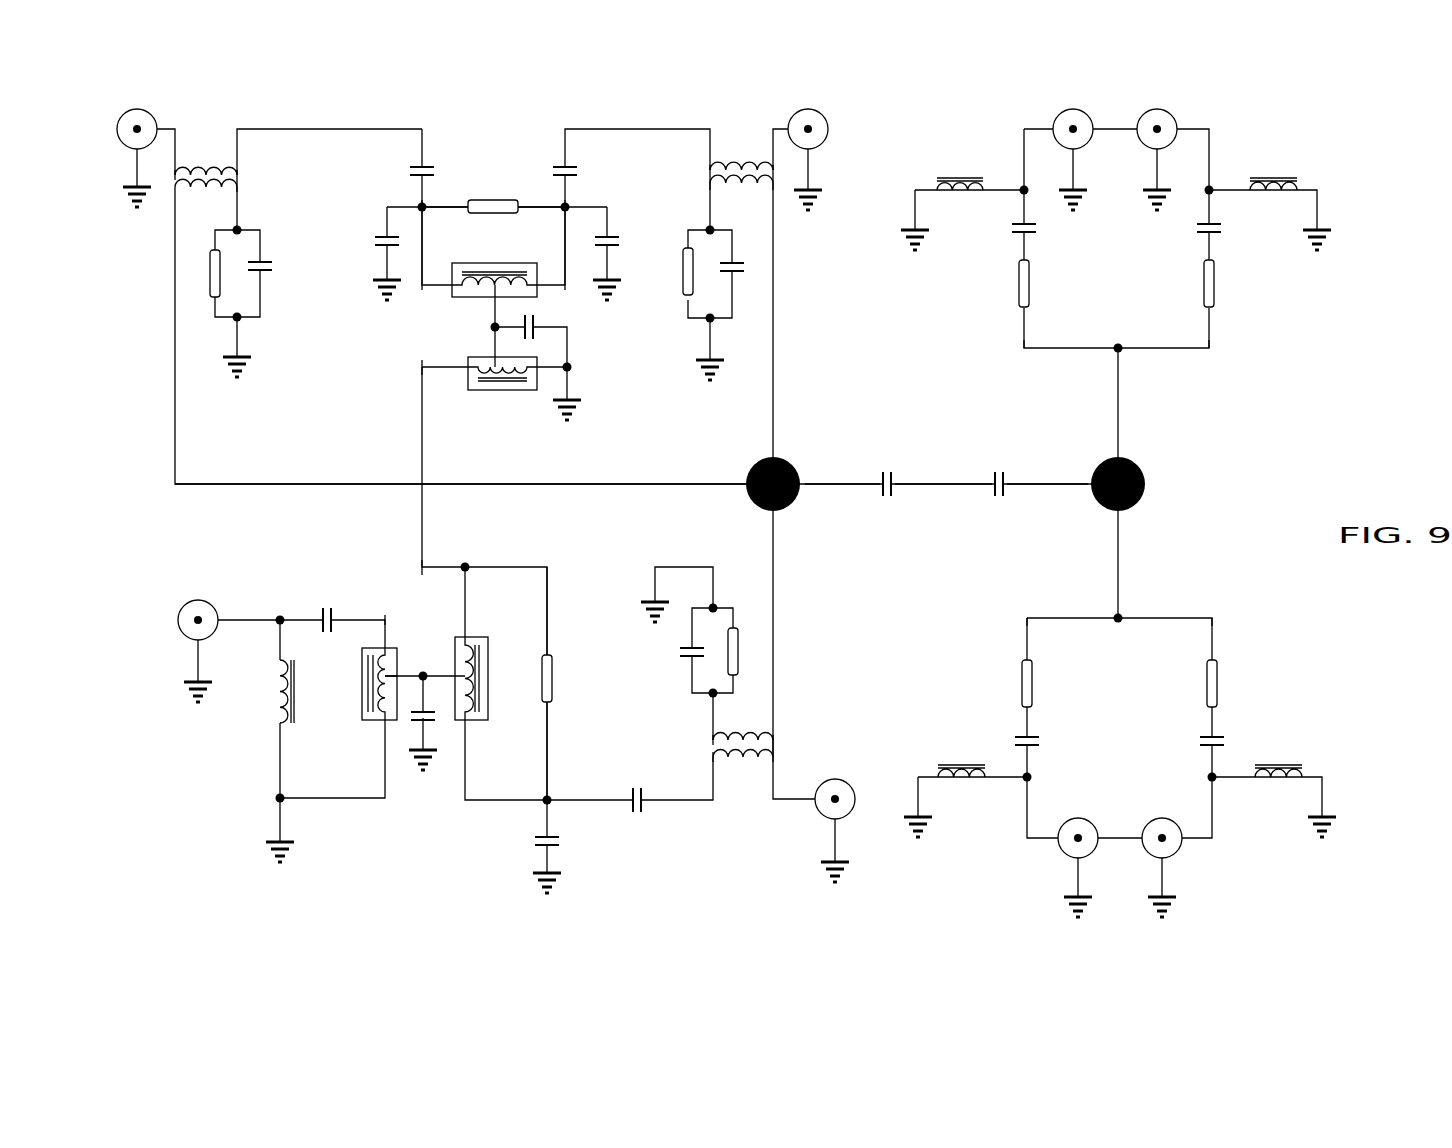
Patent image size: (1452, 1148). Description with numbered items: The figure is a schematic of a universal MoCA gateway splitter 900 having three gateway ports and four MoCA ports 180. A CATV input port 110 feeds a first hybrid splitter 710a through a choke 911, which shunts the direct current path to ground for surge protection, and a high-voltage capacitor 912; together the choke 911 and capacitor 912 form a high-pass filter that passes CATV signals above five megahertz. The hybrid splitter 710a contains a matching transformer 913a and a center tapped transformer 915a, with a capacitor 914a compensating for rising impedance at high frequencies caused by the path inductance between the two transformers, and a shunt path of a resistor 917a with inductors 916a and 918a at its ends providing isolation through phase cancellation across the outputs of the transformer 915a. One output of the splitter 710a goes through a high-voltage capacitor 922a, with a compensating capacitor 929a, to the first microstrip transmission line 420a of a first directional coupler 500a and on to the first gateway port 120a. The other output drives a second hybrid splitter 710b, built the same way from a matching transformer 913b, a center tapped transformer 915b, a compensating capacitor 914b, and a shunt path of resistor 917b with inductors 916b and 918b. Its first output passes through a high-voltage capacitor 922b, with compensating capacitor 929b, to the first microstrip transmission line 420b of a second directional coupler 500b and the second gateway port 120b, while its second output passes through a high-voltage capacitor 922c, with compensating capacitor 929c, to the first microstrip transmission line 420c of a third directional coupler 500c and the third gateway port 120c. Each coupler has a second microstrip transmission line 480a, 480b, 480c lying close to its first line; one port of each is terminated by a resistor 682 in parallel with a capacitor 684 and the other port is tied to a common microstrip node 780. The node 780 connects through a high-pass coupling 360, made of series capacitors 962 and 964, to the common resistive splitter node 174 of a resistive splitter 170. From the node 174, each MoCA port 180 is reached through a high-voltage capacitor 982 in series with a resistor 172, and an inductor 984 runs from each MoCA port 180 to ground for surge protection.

The CATV input port 110 is at (182, 606).
The first gateway port 120a is at (848, 781).
The second gateway port 120b is at (118, 124).
The third gateway port 120c is at (826, 118).
The resistive splitter 170 is at (1276, 396).
The resistor 172 is at (1020, 287).
The common resistive splitter node 174 is at (1130, 470).
The MoCA port 180 is at (1145, 112).
The high-pass coupling 360 is at (955, 465).
The first microstrip transmission line 420a is at (718, 765).
The first microstrip transmission line 420b is at (237, 170).
The first microstrip transmission line 420c is at (712, 172).
The second microstrip transmission line 480a is at (772, 742).
The second microstrip transmission line 480b is at (238, 192).
The second microstrip transmission line 480c is at (773, 200).
The first directional coupler 500a is at (742, 800).
The second directional coupler 500b is at (199, 125).
The third directional coupler 500c is at (742, 135).
The resistor 682 is at (213, 265).
The capacitor 684 is at (262, 275).
The first hybrid splitter 710a is at (405, 617).
The second hybrid splitter 710b is at (450, 335).
The common microstrip node 780 is at (778, 468).
The universal MoCA gateway splitter 900 is at (436, 903).
The choke 911 is at (275, 705).
The high-voltage capacitor 912 is at (320, 611).
The matching transformer 913a is at (390, 669).
The matching transformer 913b is at (495, 392).
The capacitor 914a is at (412, 718).
The capacitor 914b is at (540, 330).
The center tapped transformer 915a is at (500, 628).
The center tapped transformer 915b is at (497, 264).
The inductor 916a is at (549, 622).
The inductor 916b is at (447, 207).
The resistor 917a is at (553, 672).
The resistor 917b is at (493, 200).
The inductor 918a is at (549, 745).
The inductor 918b is at (537, 207).
The high-voltage capacitor 922a is at (636, 805).
The high-voltage capacitor 922b is at (412, 168).
The high-voltage capacitor 922c is at (572, 168).
The capacitor 929a is at (545, 840).
The capacitor 929b is at (385, 238).
The capacitor 929c is at (607, 238).
The capacitor 962 is at (885, 492).
The capacitor 964 is at (1003, 492).
The high-voltage capacitor 982 is at (1035, 232).
The inductor 984 is at (957, 180).